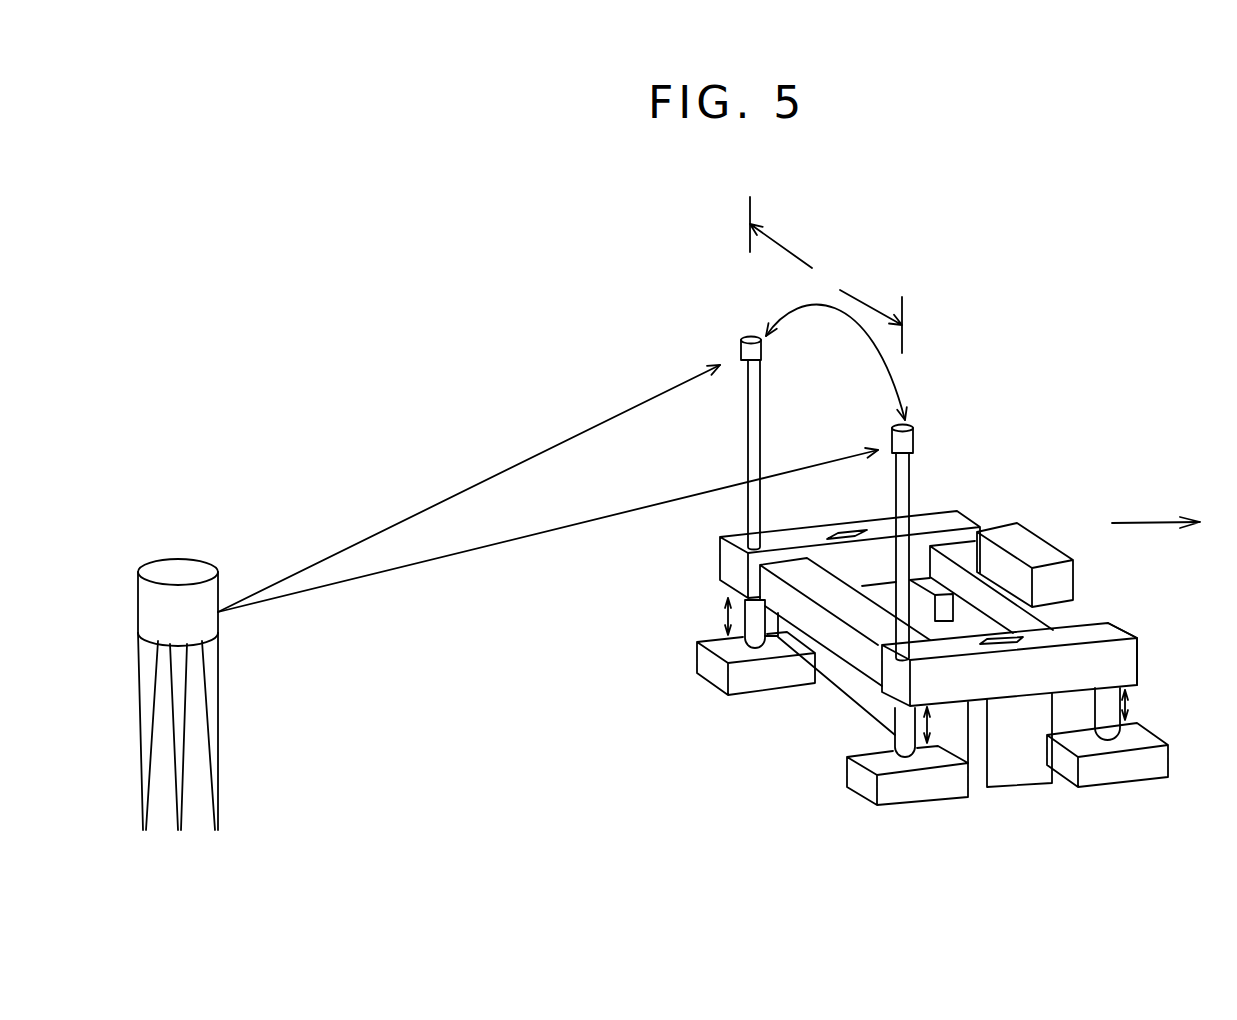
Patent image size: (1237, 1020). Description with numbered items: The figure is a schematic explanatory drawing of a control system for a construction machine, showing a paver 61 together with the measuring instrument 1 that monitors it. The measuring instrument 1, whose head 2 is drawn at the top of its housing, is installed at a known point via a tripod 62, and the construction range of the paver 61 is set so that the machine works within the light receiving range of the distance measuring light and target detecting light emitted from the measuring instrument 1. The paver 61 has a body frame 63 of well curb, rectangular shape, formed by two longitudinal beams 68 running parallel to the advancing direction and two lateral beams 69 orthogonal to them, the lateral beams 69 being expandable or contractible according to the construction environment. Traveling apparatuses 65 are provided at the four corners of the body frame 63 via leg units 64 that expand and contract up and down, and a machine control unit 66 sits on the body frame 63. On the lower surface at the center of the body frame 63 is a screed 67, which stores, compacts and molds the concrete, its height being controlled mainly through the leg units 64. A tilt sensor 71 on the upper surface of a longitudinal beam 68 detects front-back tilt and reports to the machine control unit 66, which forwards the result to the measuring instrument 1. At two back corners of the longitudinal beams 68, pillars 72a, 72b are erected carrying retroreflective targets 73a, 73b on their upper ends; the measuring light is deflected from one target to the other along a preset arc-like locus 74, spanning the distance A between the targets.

The measuring instrument 1 is at (188, 556).
The measuring head of instrument 2 is at (168, 557).
The paver 61 is at (1043, 455).
The tripod 62 is at (220, 700).
The body frame 63 is at (1147, 647).
The leg unit 64 is at (1132, 705).
The traveling apparatus 65 is at (1105, 790).
The machine control unit 66 is at (1040, 538).
The screed 67 is at (1013, 790).
The longitudinal beam 68 is at (1062, 637).
The lateral beam 69 is at (783, 597).
The tilt sensor 71 is at (838, 527).
The pillar 72a is at (746, 437).
The pillar 72b is at (910, 478).
The target 73a is at (742, 338).
The target 73b is at (914, 433).
The arc-like locus 74 is at (852, 316).
The distance A is at (826, 275).